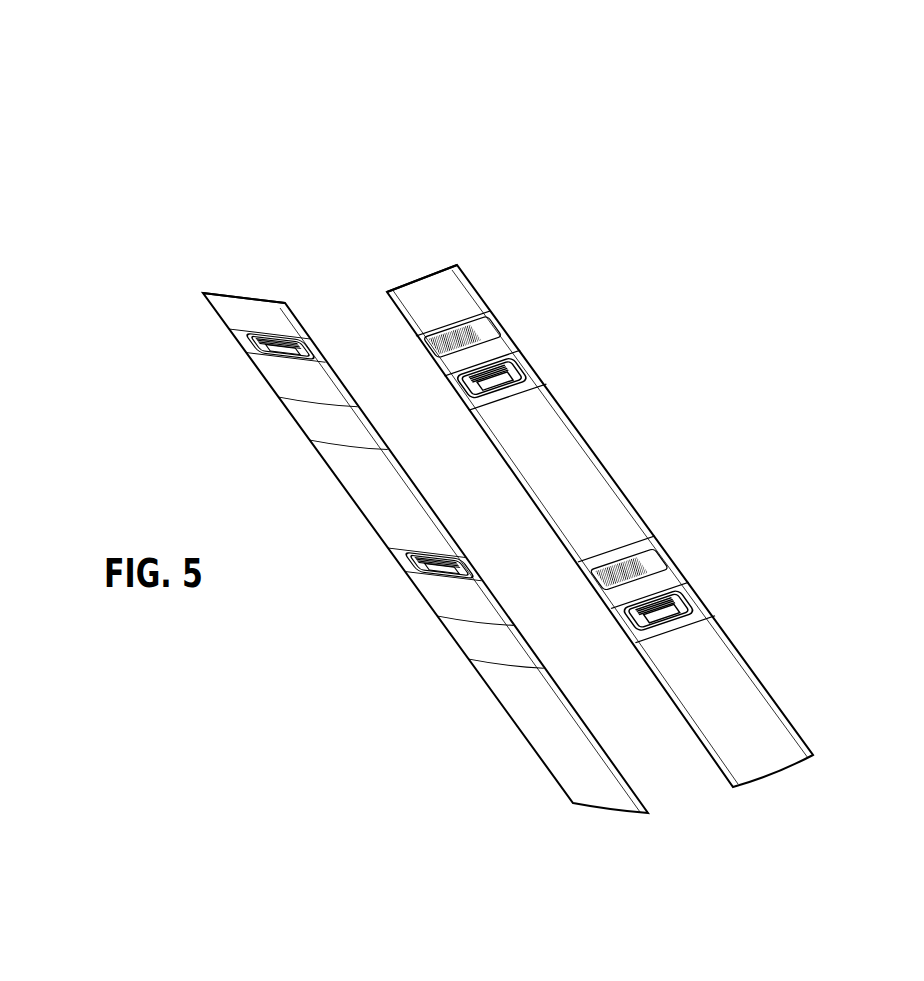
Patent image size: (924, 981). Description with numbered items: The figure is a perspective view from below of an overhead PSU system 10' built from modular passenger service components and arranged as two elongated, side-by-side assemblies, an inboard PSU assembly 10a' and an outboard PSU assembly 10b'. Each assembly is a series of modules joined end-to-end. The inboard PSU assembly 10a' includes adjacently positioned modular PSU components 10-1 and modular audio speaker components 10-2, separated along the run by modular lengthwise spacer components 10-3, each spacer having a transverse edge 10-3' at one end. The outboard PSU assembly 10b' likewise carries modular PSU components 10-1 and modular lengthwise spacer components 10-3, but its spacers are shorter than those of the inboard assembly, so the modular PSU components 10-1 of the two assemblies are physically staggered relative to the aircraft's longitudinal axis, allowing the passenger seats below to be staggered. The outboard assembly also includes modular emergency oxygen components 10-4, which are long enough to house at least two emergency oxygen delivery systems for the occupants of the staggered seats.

The PSU system 10' is at (415, 312).
The inboard PSU assembly 10a' is at (591, 474).
The outboard PSU assembly 10b' is at (400, 479).
The modular PSU component 10-1 is at (244, 352).
The modular audio speaker component 10-2 is at (502, 348).
The modular lengthwise spacer component 10-3 is at (423, 516).
The transverse edge 10-3' is at (389, 232).
The modular emergency oxygen component 10-4 is at (307, 414).